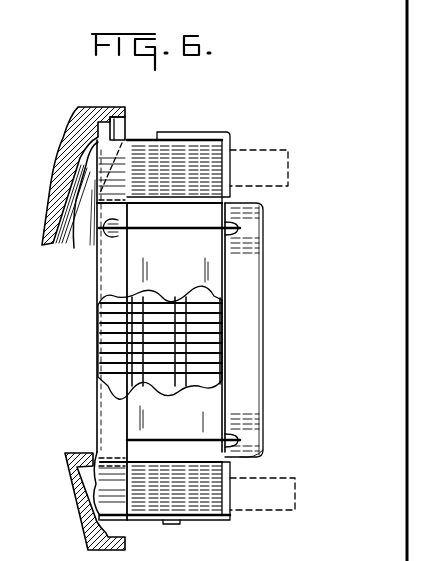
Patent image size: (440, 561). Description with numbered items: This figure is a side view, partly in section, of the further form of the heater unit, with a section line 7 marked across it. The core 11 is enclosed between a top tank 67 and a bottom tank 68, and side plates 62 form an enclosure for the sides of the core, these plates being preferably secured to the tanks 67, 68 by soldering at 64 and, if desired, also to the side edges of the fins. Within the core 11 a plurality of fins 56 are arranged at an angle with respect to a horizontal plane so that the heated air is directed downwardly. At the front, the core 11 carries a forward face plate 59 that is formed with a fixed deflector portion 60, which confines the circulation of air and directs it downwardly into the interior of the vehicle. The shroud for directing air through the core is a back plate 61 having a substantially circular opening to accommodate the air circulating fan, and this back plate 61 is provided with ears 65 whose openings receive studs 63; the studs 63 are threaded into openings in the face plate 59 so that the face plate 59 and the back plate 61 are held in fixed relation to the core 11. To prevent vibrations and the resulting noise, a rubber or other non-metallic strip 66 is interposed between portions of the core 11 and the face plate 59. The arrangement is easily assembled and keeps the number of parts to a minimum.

The section line 7- 7 is at (150, 548).
The core 11 is at (100, 357).
The fins 56 is at (102, 334).
The face plate 59 is at (92, 532).
The deflector portion 60 is at (50, 196).
The back plate 61 is at (234, 430).
The plates 62 is at (240, 283).
The studs 63 is at (241, 228).
The soldering 64 is at (222, 206).
The ears 65 is at (263, 451).
The non-metallic strip 66 is at (128, 138).
The top tank 67 is at (184, 150).
The bottom tank 68 is at (212, 518).